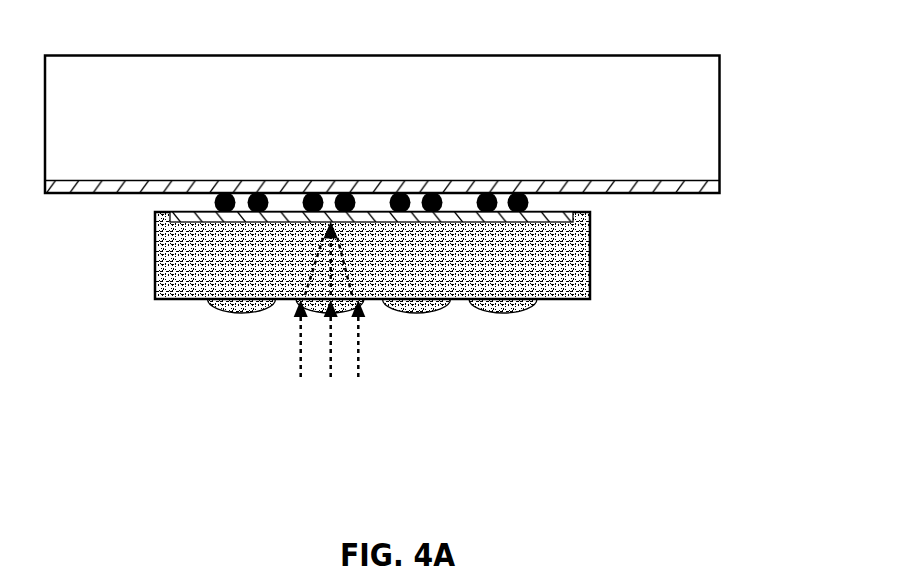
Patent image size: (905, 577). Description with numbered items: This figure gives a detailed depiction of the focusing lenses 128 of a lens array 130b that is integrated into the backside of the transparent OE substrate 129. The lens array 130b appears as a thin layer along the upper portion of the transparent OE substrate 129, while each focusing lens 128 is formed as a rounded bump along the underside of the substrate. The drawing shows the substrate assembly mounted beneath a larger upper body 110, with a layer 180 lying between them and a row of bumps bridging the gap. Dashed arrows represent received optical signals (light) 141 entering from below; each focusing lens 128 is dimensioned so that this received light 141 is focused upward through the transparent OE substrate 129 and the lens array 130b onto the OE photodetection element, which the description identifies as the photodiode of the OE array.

The substrate / circuit board 110 is at (717, 93).
The bonding layer 180 is at (671, 191).
The transparent OE substrate 129 is at (160, 246).
The lens array 130b is at (547, 218).
The focusing lens 128 is at (233, 305).
The received optical signals (light) 141 is at (367, 392).